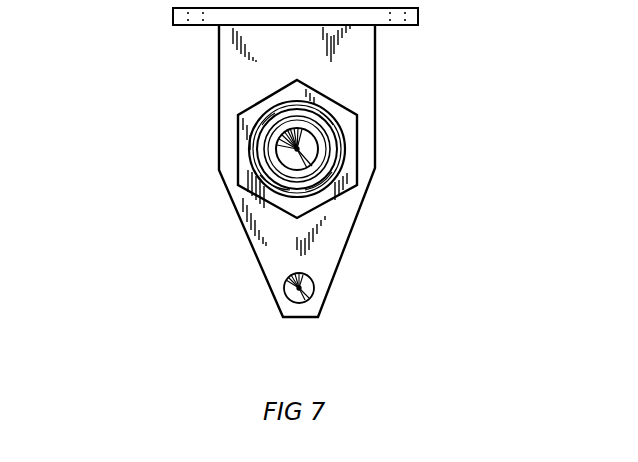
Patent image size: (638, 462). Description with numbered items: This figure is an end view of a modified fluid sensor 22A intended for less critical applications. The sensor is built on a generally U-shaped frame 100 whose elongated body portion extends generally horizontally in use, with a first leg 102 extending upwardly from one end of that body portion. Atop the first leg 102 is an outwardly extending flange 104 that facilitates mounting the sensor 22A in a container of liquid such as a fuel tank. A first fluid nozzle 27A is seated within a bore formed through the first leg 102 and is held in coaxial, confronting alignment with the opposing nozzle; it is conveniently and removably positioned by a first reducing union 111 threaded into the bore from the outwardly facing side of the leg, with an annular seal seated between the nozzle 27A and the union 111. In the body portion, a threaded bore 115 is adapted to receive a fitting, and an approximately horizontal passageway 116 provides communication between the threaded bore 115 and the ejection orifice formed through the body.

The sensor 22A is at (178, 260).
The frame 100 is at (382, 197).
The first leg 102 is at (376, 63).
The flange 104 is at (420, 15).
The first reducing union 111 is at (240, 99).
The first fluid nozzle 27A is at (312, 132).
The threaded bore 115 is at (296, 290).
The passageway 116 is at (301, 288).